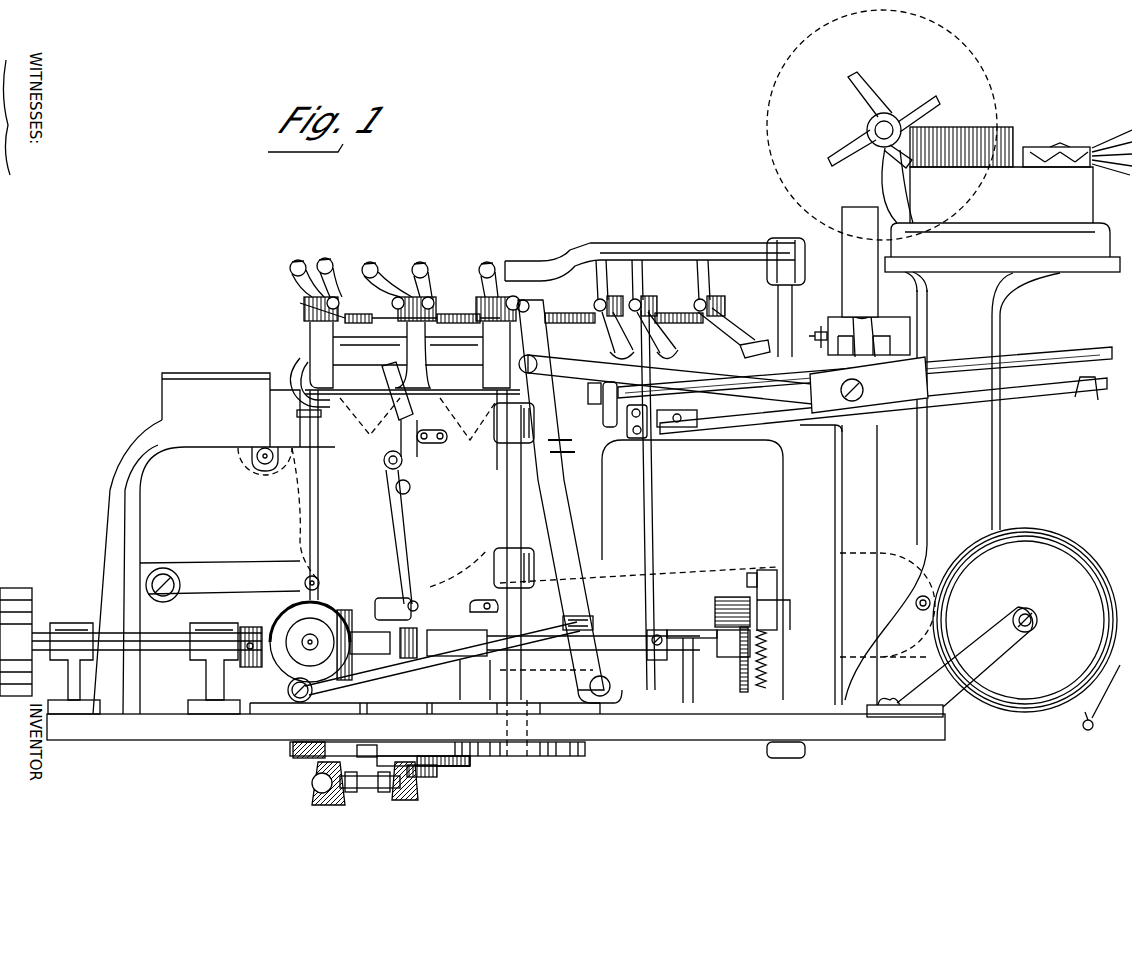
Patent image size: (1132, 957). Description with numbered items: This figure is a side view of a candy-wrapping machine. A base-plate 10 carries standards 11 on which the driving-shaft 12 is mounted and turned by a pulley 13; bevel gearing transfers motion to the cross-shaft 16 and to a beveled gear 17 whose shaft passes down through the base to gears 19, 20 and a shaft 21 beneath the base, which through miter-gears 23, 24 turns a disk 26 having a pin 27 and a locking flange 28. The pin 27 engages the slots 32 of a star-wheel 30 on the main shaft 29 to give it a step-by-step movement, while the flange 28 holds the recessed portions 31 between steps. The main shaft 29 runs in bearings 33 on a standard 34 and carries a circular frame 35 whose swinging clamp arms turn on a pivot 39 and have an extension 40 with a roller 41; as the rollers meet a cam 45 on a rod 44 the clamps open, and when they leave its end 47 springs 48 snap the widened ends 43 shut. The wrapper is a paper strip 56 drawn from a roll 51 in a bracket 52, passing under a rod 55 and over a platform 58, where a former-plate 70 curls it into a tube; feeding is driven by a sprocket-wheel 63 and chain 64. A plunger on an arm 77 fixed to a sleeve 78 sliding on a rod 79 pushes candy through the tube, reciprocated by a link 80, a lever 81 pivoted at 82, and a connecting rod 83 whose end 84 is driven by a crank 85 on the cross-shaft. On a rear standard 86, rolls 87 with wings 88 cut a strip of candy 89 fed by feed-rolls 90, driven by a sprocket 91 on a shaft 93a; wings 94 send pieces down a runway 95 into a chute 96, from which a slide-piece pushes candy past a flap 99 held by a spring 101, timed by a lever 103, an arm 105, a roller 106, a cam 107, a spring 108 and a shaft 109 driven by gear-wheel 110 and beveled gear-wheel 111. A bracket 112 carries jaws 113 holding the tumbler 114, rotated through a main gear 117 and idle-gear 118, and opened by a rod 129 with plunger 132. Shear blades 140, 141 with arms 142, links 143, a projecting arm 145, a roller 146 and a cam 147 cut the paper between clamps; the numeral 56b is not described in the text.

The base-plate 10 is at (215, 742).
The standards 11 is at (80, 606).
The driving-shaft 12 is at (185, 648).
The pulley 13 is at (17, 627).
The cross-shaft 16 is at (308, 640).
The beveled gear 17 is at (284, 686).
The gear 19 is at (300, 768).
The gear 20 is at (312, 792).
The shaft 21 is at (375, 790).
The miter-gear 23 is at (418, 792).
The miter-gear 24 is at (432, 770).
The disk 26 is at (464, 793).
The pin 27 is at (362, 754).
The locking flange 28 is at (493, 775).
The main shaft 29 is at (507, 490).
The star-wheel 30 is at (517, 758).
The recessed portions 31 is at (546, 758).
The slots 32 is at (575, 758).
The bearings 33 is at (498, 430).
The standard 34 is at (652, 535).
The frame 35 is at (445, 335).
The pivot 39 is at (337, 297).
The extension 40 is at (306, 284).
The roller 41 is at (327, 264).
The widened end 43 is at (325, 402).
The rod 44 is at (778, 300).
The cam 45 is at (668, 250).
The cam end 47 is at (522, 263).
The springs 48 is at (352, 314).
The roll 51 is at (1022, 717).
The bracket 52 is at (948, 702).
The rod 55 is at (1086, 730).
The paper strip 56 is at (445, 375).
The leader 56b is at (1108, 696).
The platform 58 is at (1056, 393).
The sprocket-wheel 63 is at (922, 560).
The chain 64 is at (768, 575).
The former-plate 70 is at (486, 615).
The arm 77 is at (868, 330).
The sleeve 78 is at (905, 408).
The rod 79 is at (670, 428).
The link 80 is at (582, 382).
The lever 81 is at (567, 520).
The pivot 82 is at (611, 686).
The connecting rod 83 is at (552, 660).
The end of connecting rod 84 is at (298, 702).
The crank 85 is at (280, 668).
The standard 86 is at (996, 480).
The rolls 87 is at (1020, 152).
The wings 88 is at (1000, 135).
The strip of candy 89 is at (1096, 146).
The feed-rolls 90 is at (1056, 142).
The sprocket 91 is at (998, 82).
The shaft 93a is at (888, 124).
The wings 94 is at (858, 108).
The runway 95 is at (890, 210).
The chute 96 is at (845, 222).
The flap 99 is at (846, 330).
The spring 101 is at (807, 336).
The lever 103 is at (893, 533).
The arm 105 is at (778, 600).
The roller 106 is at (730, 610).
The cam 107 is at (742, 683).
The spring 108 is at (768, 684).
The shaft 109 is at (388, 658).
The gear-wheel 110 is at (342, 630).
The beveled gear-wheel 111 is at (314, 632).
The bracket 112 is at (112, 478).
The jaws 113 is at (280, 375).
The tumbler 114 is at (300, 372).
The main gear 117 is at (296, 520).
The idle-gear 118 is at (258, 478).
The rod 129 is at (325, 515).
The plunger 132 is at (318, 420).
The blade 140 is at (414, 400).
The blade 141 is at (401, 428).
The arm 142 is at (384, 462).
The link 143 is at (393, 540).
The projecting arm 145 is at (495, 665).
The roller 146 is at (432, 602).
The cam 147 is at (391, 630).